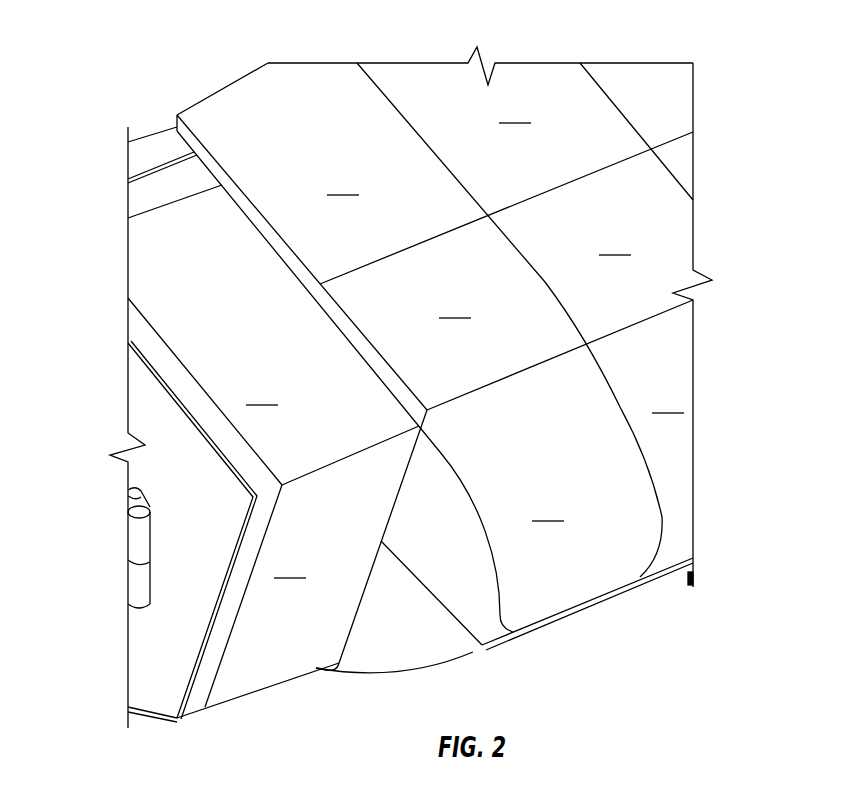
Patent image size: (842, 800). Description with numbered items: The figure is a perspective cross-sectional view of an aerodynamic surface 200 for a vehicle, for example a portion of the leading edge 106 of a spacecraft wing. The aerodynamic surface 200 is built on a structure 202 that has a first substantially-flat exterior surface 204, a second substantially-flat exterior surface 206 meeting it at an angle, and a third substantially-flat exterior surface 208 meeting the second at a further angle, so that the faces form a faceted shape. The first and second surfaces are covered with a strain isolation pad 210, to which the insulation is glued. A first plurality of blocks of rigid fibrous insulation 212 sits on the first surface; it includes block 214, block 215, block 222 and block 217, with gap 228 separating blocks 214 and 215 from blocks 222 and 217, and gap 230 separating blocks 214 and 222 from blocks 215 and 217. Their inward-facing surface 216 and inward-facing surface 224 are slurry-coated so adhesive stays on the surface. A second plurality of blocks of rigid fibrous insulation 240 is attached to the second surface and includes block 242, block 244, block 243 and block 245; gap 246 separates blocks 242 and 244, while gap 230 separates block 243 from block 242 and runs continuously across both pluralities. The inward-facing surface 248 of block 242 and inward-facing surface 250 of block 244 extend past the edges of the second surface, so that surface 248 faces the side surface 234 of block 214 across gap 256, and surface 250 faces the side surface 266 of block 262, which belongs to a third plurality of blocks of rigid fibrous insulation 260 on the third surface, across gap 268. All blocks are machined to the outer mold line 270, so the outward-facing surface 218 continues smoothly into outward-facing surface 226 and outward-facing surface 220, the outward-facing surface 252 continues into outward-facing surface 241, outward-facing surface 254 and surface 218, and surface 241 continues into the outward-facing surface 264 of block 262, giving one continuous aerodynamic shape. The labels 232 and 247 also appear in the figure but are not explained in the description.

The leading edge 106 is at (103, 460).
The aerodynamic surface 200 is at (614, 614).
The structure 202 is at (155, 677).
The first substantially-flat exterior surface 204 is at (153, 351).
The second substantially-flat exterior surface 206 is at (193, 702).
The third substantially-flat exterior surface 208 is at (155, 717).
The strain isolation pad 210 is at (217, 502).
The first plurality of blocks of rigid fibrous insulation 212 is at (295, 324).
The block 214 is at (355, 338).
The block 215 is at (668, 258).
The inward-facing surface 216 is at (377, 386).
The block 217 is at (552, 86).
The outward-facing surface 218 is at (455, 305).
The outward-facing surface 220 is at (615, 242).
The block 222 is at (262, 223).
The inward-facing surface 224 is at (283, 258).
The outward-facing surface 226 is at (343, 182).
The gap 228 is at (577, 178).
The gap 230 is at (391, 99).
The panel section 232 is at (515, 110).
The side surface 234 is at (416, 406).
The second plurality of blocks of rigid fibrous insulation 240 is at (357, 546).
The outward-facing surface 241 is at (465, 662).
The block 242 is at (417, 502).
The block 243 is at (665, 358).
The block 244 is at (378, 607).
The block 245 is at (678, 574).
The gap 246 is at (418, 573).
The seal 247 is at (690, 585).
The inward-facing surface 248 is at (400, 463).
The inward-facing surface 250 is at (343, 625).
The outward-facing surface 252 is at (548, 508).
The outward-facing surface 254 is at (668, 400).
The gap 256 is at (536, 368).
The third plurality of blocks of rigid fibrous insulation 260 is at (298, 700).
The block 262 is at (323, 675).
The outward-facing surface 264 is at (300, 685).
The side surface 266 is at (381, 672).
The gap 268 is at (340, 670).
The outer mold line 270 is at (240, 178).